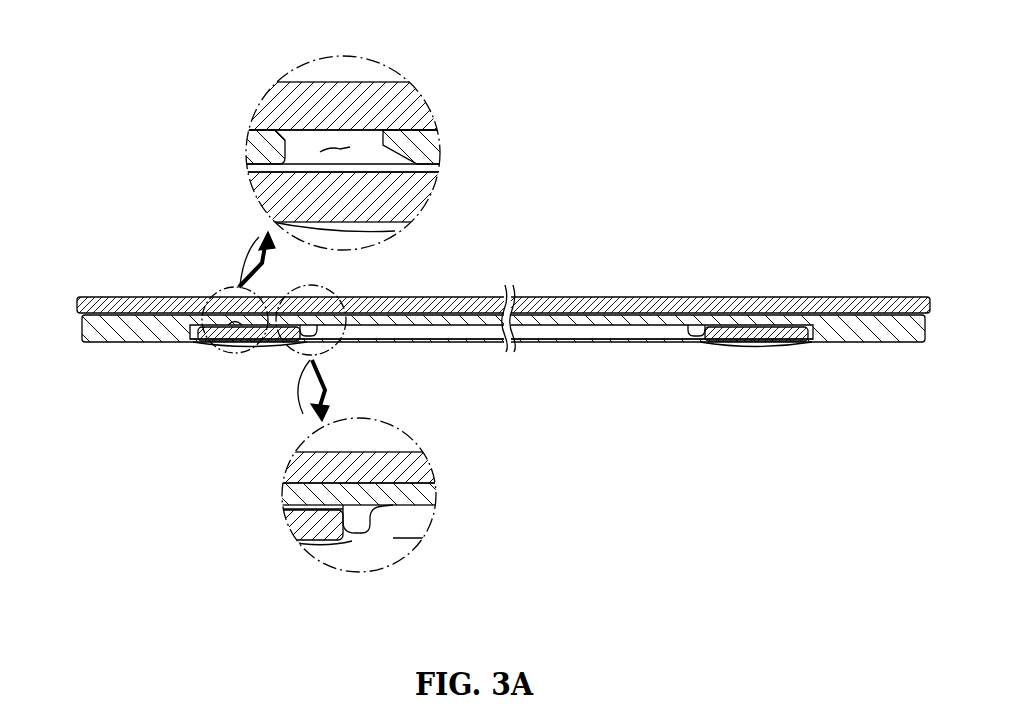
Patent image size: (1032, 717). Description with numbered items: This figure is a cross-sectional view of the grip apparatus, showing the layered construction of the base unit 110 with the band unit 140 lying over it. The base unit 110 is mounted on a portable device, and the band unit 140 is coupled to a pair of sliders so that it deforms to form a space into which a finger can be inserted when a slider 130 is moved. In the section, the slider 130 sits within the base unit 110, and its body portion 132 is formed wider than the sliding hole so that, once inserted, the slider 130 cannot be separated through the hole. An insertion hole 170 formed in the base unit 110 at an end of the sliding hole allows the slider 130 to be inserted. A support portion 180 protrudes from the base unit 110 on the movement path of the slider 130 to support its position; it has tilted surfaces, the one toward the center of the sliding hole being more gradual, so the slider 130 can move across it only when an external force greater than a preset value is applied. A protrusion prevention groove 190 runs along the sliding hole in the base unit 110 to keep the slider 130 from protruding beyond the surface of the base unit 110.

The base unit 110 is at (257, 148).
The slider 130 is at (196, 333).
The body portion 132 is at (277, 193).
The band unit 140 is at (275, 107).
The insertion hole 170 is at (337, 147).
The support portion 180 is at (305, 337).
The protrusion prevention groove 190 is at (448, 331).